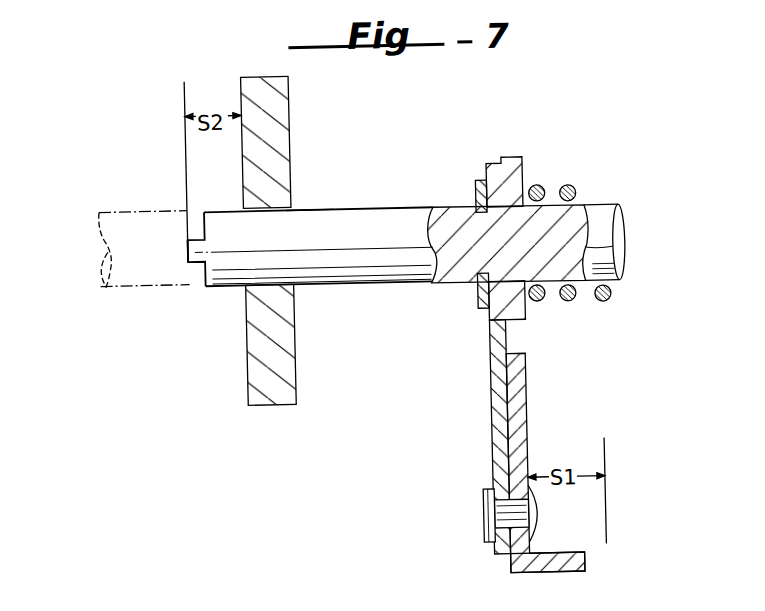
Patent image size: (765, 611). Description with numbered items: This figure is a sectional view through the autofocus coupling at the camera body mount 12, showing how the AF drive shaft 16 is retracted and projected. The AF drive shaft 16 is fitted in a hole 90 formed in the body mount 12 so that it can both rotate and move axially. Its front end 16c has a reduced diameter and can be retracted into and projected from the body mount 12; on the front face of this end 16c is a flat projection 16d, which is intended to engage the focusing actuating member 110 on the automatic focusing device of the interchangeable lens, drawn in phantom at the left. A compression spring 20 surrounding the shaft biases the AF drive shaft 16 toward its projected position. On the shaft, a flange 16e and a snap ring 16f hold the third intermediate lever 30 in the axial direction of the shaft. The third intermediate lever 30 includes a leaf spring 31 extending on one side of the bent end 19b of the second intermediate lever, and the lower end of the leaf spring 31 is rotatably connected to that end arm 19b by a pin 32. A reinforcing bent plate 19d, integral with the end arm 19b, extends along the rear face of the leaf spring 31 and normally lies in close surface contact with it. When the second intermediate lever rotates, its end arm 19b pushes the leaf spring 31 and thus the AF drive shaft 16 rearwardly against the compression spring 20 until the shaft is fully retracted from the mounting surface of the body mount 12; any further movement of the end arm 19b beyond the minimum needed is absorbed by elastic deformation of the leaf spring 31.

The focusing actuating member 110 is at (140, 224).
The body mount 12 is at (286, 139).
The hole 90 is at (305, 209).
The AF drive shaft 16 is at (602, 219).
The front end 16c is at (242, 224).
The flat projection 16d is at (197, 254).
The flange 16e is at (516, 168).
The snap ring 16f is at (481, 180).
The compression spring 20 is at (568, 306).
The third intermediate lever 30 is at (491, 344).
The leaf spring 31 is at (461, 438).
The reinforcing bent plate 19d is at (525, 396).
The bent end 19b is at (530, 563).
The pin 32 is at (482, 512).